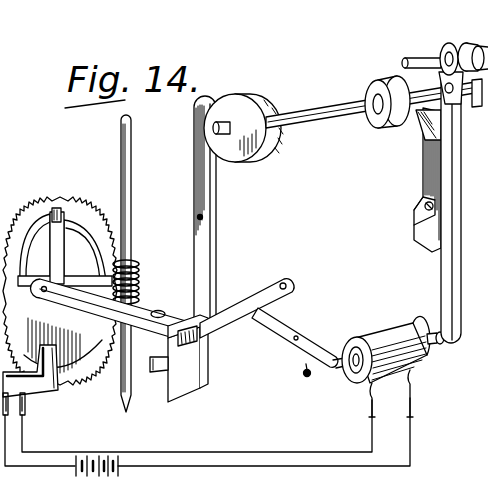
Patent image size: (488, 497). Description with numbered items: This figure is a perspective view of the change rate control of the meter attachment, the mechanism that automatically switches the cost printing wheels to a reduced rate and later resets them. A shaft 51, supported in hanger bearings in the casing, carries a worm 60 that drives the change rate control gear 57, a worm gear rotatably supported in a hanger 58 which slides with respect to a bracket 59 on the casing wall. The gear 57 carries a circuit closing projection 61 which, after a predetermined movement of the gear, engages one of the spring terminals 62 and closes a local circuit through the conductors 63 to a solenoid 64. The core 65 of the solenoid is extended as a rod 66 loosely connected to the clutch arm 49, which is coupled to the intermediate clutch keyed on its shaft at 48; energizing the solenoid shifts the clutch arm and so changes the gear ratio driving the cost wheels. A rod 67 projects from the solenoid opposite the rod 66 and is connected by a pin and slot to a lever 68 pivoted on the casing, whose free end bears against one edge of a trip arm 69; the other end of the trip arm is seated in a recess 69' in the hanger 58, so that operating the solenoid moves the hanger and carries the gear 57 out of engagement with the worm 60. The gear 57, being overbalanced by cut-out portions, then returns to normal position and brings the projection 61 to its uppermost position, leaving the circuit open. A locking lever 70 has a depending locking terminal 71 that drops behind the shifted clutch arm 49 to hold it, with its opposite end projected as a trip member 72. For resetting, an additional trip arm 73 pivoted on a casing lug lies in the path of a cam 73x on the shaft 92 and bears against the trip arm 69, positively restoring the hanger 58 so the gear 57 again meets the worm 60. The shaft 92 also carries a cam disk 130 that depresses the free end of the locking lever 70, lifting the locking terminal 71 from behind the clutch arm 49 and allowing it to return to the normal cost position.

The key 48 is at (440, 51).
The clutch arm 49 is at (446, 278).
The shaft 51 is at (133, 177).
The change rate control gear 57 is at (31, 204).
The hanger 58 is at (158, 317).
The bracket 59 is at (170, 367).
The worm 60 is at (138, 285).
The circuit closing projection 61 is at (61, 208).
The spring terminals 62 is at (46, 388).
The conductors 63 is at (172, 455).
The solenoid 64 is at (378, 337).
The core 65 is at (358, 379).
The rod 66 is at (437, 346).
The rod 67 is at (307, 377).
The lever 68 is at (288, 327).
The trip arm 69 is at (247, 303).
The recess 69' is at (209, 342).
The locking lever 70 is at (426, 178).
The locking terminal 71 is at (430, 245).
The trip member 72 is at (420, 126).
The trip arm 73 is at (216, 174).
The cam 73x is at (233, 101).
The shaft 92 is at (310, 116).
The cam disk 130 is at (380, 85).